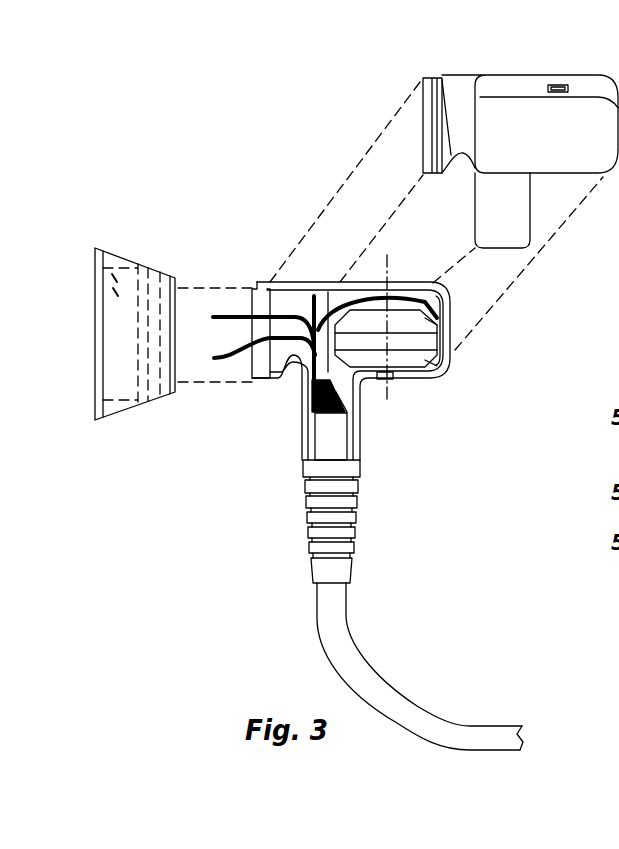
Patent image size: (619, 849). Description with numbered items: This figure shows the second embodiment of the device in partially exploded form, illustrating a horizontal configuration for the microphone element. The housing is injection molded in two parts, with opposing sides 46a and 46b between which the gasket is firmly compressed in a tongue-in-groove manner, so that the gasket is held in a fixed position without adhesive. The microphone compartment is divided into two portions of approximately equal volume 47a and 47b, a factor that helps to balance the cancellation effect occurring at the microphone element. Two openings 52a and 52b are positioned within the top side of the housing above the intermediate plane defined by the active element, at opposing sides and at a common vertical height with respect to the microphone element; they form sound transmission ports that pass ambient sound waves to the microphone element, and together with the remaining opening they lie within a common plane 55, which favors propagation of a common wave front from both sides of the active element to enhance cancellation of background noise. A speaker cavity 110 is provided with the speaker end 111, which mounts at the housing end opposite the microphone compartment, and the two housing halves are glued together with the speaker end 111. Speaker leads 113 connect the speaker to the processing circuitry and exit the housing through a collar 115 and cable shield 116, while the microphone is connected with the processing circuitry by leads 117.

The speaker cavity 110 is at (120, 372).
The speaker end 111 is at (112, 272).
The speaker leads 113 is at (213, 342).
The collar 115 is at (312, 468).
The cable shield 116 is at (376, 691).
The leads 117 is at (310, 308).
The housing side 46a is at (505, 113).
The housing side 46b is at (453, 353).
The microphone compartment portion 47a is at (438, 377).
The microphone compartment portion 47b is at (433, 308).
The opening 52a is at (563, 84).
The opening 52b is at (390, 300).
The common plane 55 is at (385, 272).